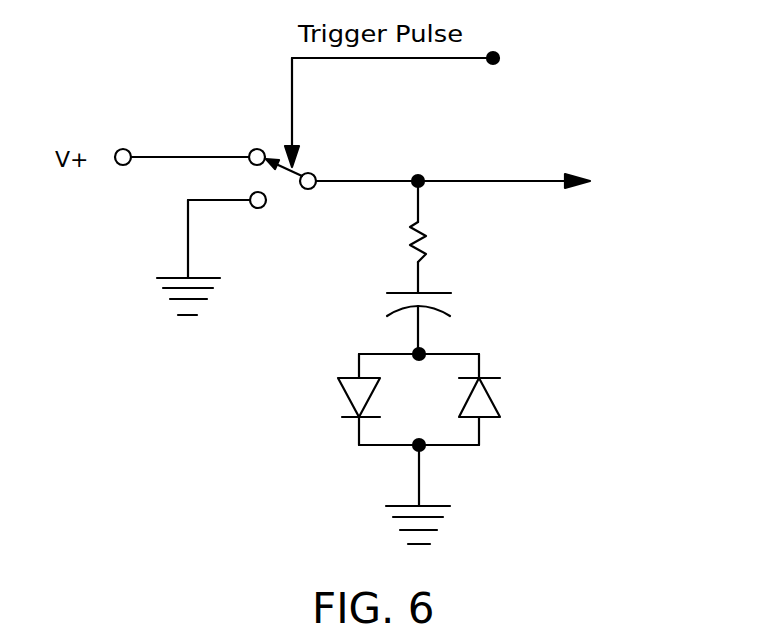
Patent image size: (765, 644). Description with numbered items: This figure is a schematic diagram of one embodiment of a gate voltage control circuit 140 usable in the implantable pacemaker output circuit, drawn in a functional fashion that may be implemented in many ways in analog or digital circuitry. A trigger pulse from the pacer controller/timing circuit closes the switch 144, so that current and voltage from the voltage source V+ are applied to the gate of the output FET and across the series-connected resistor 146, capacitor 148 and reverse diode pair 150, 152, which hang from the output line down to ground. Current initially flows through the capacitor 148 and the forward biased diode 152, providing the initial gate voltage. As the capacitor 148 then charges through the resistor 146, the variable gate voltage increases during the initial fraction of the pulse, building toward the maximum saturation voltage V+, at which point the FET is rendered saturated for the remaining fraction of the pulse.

The gate voltage control circuit 140 is at (218, 298).
The switch 144 is at (300, 190).
The resistor 146 is at (432, 242).
The capacitor 148 is at (462, 303).
The reverse diode pair diode 150 is at (333, 392).
The forward biased diode 152 is at (497, 388).